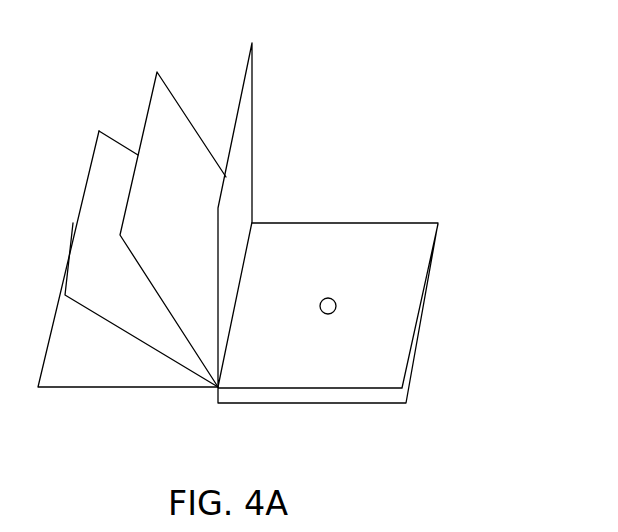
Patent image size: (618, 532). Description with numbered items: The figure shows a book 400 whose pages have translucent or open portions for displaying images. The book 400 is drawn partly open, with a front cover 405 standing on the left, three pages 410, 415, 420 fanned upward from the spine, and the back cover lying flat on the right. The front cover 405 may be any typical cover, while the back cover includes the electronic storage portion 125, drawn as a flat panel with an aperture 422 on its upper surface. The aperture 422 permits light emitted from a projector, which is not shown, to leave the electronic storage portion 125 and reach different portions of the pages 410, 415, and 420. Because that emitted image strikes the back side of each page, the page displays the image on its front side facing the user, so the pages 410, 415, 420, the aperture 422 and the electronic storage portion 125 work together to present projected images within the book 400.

The book 400 is at (543, 109).
The front cover 405 is at (98, 388).
The page 410 is at (92, 162).
The page 415 is at (152, 92).
The page 420 is at (253, 93).
The aperture 422 is at (336, 306).
The electronic storage portion 125 is at (326, 405).